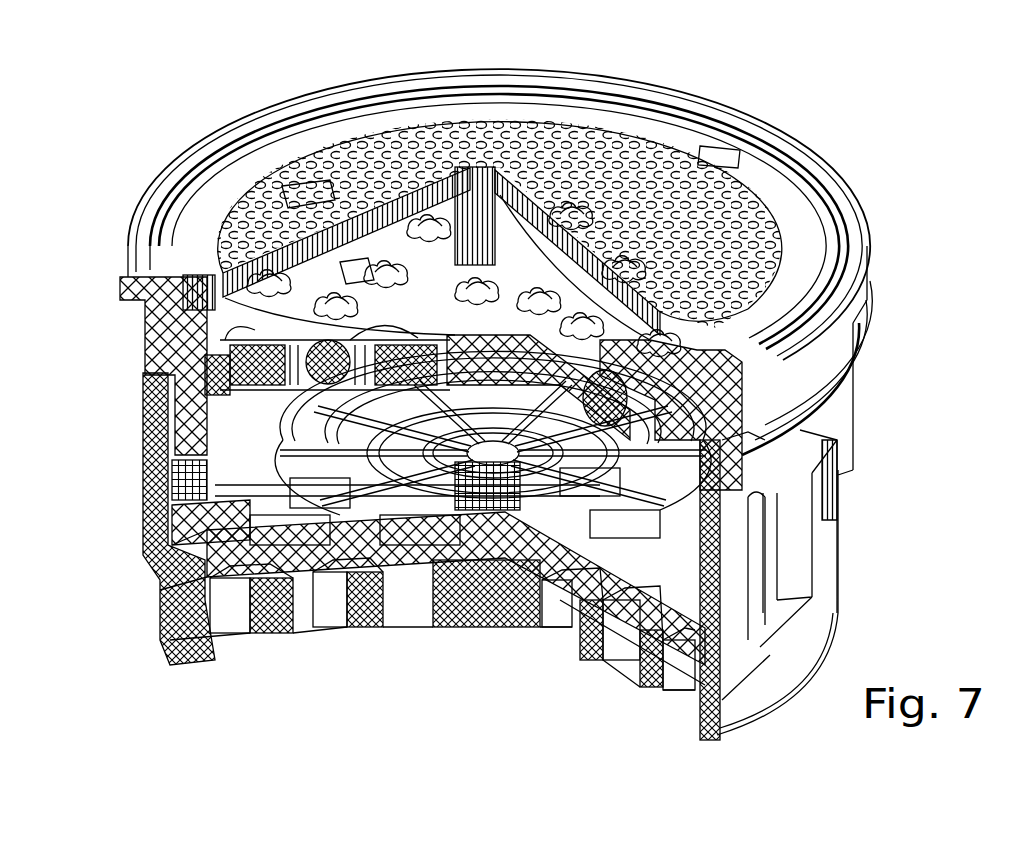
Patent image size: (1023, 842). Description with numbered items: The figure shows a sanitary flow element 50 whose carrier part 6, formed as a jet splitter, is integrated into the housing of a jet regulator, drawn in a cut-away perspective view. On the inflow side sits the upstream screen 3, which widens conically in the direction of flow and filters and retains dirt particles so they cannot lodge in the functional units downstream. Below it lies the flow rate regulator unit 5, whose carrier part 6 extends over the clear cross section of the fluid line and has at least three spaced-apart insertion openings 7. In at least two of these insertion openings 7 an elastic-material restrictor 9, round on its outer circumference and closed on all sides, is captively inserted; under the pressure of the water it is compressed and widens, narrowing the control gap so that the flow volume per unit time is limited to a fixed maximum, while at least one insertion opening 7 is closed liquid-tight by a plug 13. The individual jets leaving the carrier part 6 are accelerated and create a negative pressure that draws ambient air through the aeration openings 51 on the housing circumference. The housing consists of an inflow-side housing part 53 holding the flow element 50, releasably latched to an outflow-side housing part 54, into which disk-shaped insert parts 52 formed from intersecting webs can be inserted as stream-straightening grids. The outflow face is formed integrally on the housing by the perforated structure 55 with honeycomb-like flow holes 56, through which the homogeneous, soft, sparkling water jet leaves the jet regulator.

The inflow-side upstream screen 3 is at (650, 128).
The flow rate regulator unit 5 is at (540, 312).
The carrier part 6 is at (540, 372).
The insertion opening 7 is at (358, 266).
The restrictor 9 is at (382, 275).
The plug 13 is at (262, 320).
The flow element 50 is at (895, 112).
The aeration opening 51 is at (834, 452).
The disk-shaped insert part 52 is at (856, 336).
The inflow-side housing part 53 is at (838, 614).
The outflow-side housing part 54 is at (332, 493).
The outflow-side perforated structure 55 is at (522, 633).
The flow holes 56 is at (627, 647).